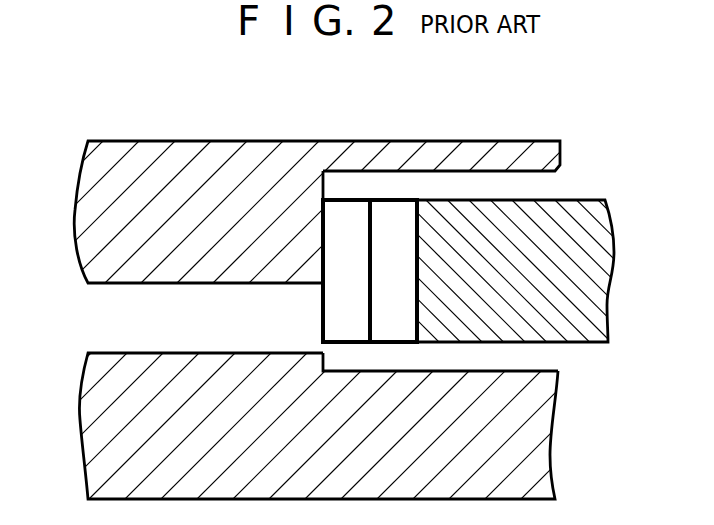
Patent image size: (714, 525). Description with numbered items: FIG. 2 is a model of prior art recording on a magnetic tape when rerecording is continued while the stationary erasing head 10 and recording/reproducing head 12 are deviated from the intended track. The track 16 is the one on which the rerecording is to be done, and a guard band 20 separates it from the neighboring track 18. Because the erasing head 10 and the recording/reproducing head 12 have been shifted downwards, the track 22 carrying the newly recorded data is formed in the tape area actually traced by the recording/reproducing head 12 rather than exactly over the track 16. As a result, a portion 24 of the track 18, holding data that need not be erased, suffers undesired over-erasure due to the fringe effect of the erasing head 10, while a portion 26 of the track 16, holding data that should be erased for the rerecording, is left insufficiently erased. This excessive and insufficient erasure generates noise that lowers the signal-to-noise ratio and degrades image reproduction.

The erasing head 10 is at (323, 323).
The recording/reproducing head 12 is at (397, 343).
The track 16 is at (78, 209).
The track 18 is at (82, 423).
The guard band 20 is at (136, 286).
The track 22 is at (612, 265).
The portion 24 is at (497, 374).
The portion 26 is at (487, 148).